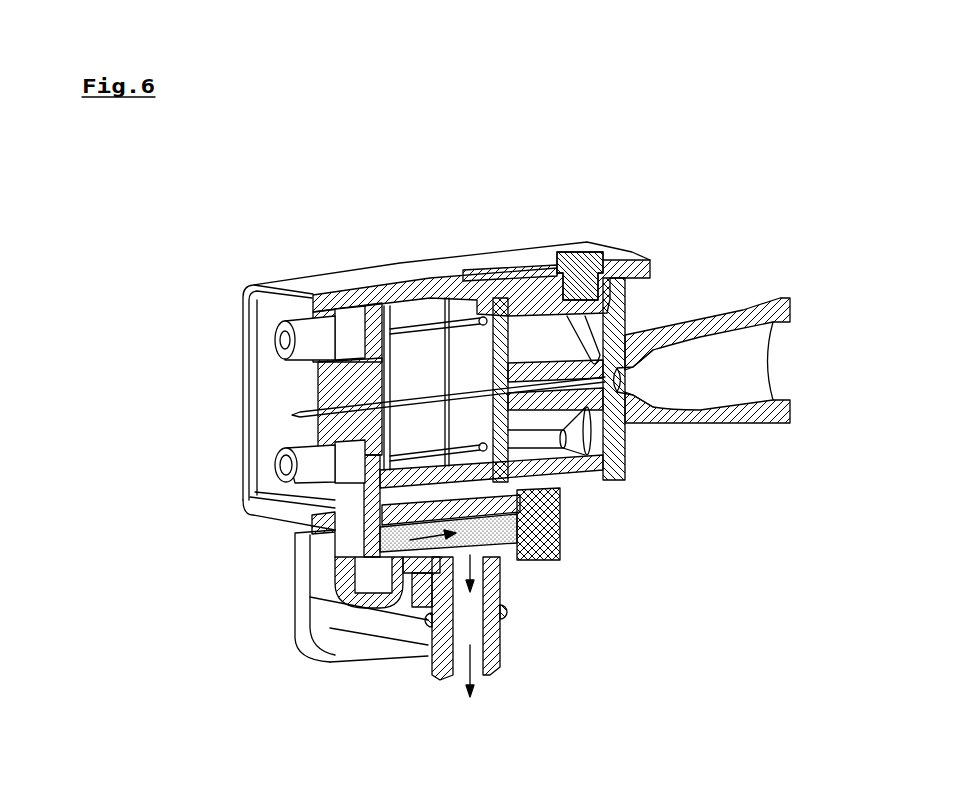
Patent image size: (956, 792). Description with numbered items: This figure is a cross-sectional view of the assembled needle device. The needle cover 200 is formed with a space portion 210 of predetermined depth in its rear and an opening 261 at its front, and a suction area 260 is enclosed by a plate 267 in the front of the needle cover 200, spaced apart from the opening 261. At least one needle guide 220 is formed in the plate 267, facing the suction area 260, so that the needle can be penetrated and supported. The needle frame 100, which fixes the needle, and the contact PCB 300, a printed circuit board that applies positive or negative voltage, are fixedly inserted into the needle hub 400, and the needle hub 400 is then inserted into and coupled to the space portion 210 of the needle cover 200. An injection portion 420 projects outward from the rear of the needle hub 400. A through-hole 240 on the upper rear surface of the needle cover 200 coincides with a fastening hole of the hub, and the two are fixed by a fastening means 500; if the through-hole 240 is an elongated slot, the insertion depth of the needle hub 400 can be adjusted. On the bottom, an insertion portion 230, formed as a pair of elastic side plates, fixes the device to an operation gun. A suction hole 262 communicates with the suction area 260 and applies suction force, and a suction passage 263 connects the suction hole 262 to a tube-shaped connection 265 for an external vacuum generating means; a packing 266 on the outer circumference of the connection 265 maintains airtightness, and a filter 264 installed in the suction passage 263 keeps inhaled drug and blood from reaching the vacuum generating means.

The needle frame 100 is at (605, 470).
The needle cover 200 is at (410, 253).
The space portion 210 is at (397, 351).
The needle guide 220 is at (312, 335).
The insertion portion 230 is at (296, 630).
The through-hole 240 is at (522, 268).
The suction area 260 is at (278, 398).
The opening 261 is at (249, 328).
The suction hole 262 is at (252, 512).
The suction passage 263 is at (352, 535).
The filter 264 is at (412, 615).
The connection 265 is at (440, 676).
The packing 266 is at (512, 622).
The plate 267 is at (358, 320).
The contact PCB 300 is at (527, 565).
The needle hub 400 is at (630, 452).
The injection portion 420 is at (712, 315).
The fastening means 500 is at (590, 243).